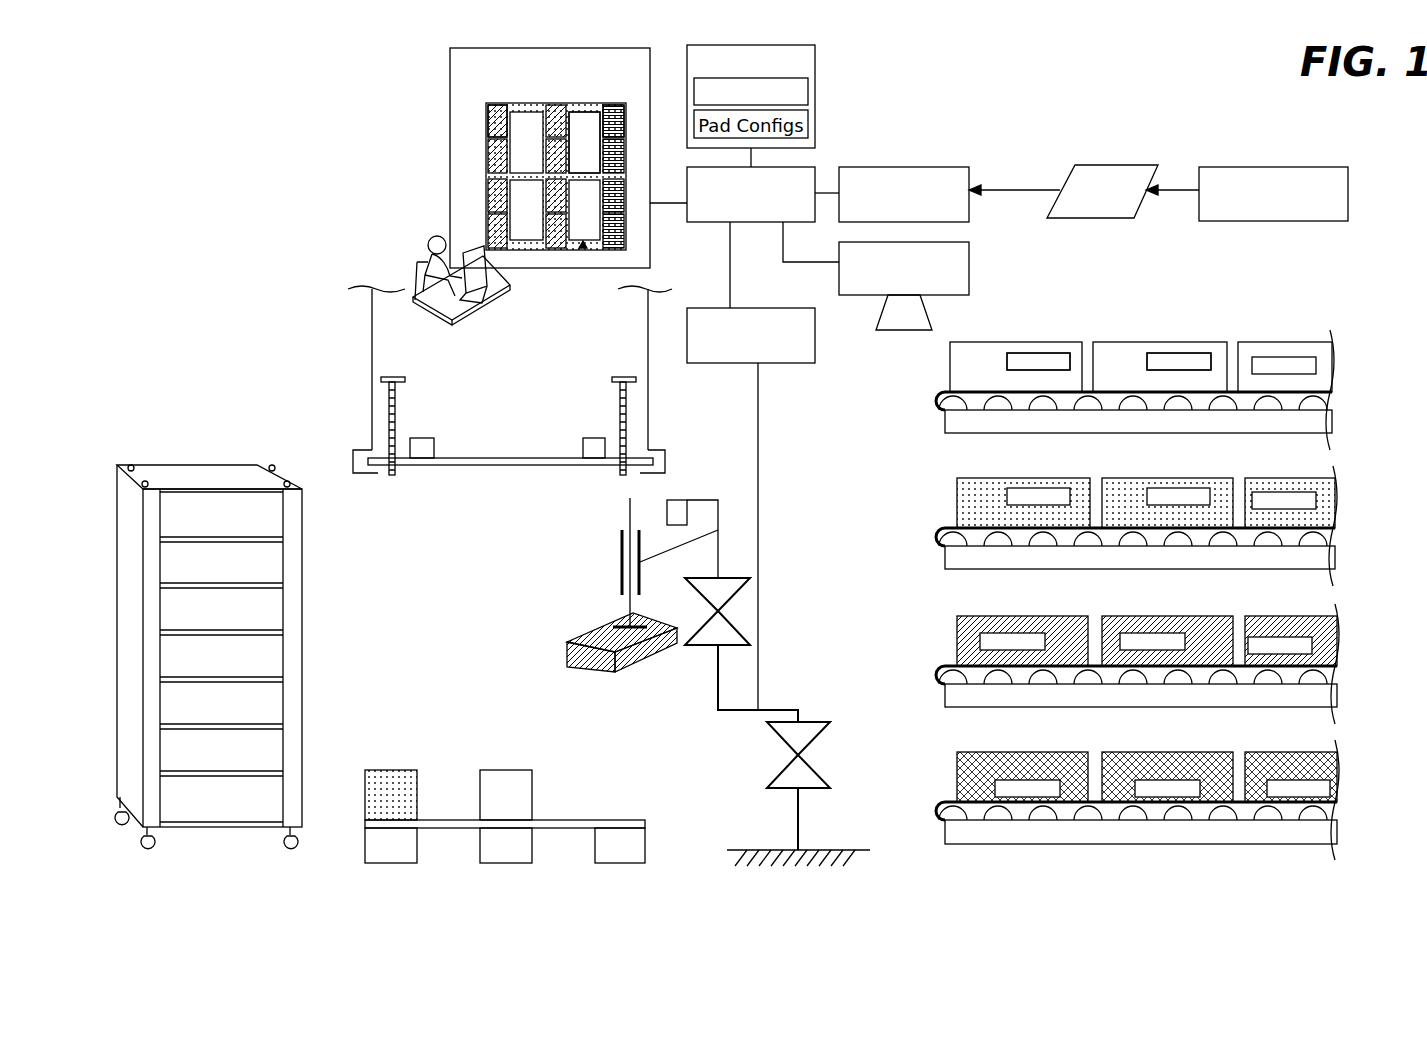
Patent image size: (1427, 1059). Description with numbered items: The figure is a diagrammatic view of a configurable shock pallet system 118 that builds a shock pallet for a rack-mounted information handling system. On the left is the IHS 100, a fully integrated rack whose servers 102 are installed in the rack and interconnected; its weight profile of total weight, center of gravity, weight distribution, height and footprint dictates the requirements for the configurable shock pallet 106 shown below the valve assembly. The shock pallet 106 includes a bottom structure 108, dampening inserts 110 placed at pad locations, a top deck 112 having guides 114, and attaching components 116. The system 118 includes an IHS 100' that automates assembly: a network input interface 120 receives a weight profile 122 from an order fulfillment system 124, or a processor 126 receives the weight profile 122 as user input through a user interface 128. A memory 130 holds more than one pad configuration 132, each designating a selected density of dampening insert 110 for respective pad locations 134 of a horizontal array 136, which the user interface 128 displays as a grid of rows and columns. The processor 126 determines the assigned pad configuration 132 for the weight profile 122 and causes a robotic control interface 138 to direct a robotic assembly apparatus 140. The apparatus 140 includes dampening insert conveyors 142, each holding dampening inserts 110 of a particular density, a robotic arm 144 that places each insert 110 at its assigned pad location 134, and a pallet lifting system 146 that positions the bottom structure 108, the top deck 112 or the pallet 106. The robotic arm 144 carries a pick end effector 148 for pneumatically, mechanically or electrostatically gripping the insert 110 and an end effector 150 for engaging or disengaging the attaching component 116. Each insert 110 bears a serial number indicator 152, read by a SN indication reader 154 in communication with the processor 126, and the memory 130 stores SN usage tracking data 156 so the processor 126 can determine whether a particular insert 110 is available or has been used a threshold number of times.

The information handling system (IHS) 100 is at (264, 657).
The IHS of the configurable shock pallet system 100' is at (1093, 97).
The servers 102 is at (237, 558).
The configurable shock pallet 106 is at (540, 802).
The bottom structure 108 is at (645, 845).
The dampening inserts 110 is at (417, 785).
The top deck 112 is at (495, 458).
The guides 114 is at (434, 438).
The attaching components 116 is at (400, 400).
The configurable shock pallet system 118 is at (356, 234).
The network input interface 120 is at (969, 172).
The weight profile 122 is at (1113, 163).
The order fulfillment system 124 is at (1263, 163).
The processor 126 is at (815, 163).
The user interface 128 is at (450, 133).
The memory 130 is at (815, 58).
The pad configuration 132 is at (486, 96).
The pad locations 134 is at (496, 126).
The horizontal array 136 is at (580, 116).
The robotic control interface 138 is at (815, 335).
The robotic assembly apparatus 140 is at (1149, 552).
The dampening insert conveyors 142 is at (953, 434).
The robotic arm 144 is at (770, 710).
The pallet lifting system 146 is at (648, 352).
The pick end effector 148 is at (620, 545).
The end effector 150 is at (690, 500).
The serial number (SN) indicator 152 is at (1068, 353).
The SN indication reader 154 is at (969, 268).
The SN usage tracking data 156 is at (808, 92).